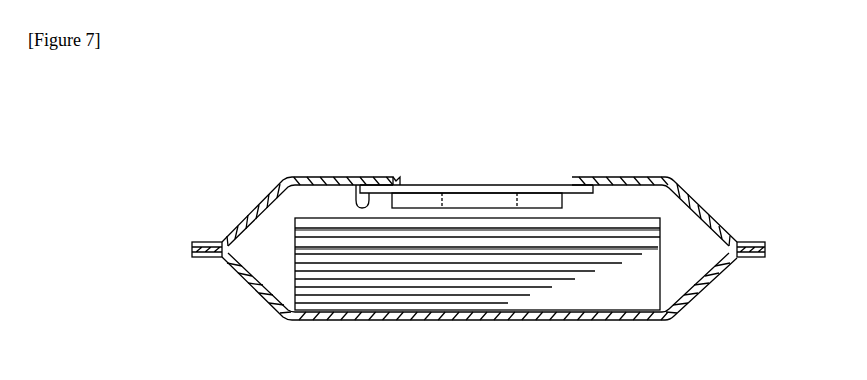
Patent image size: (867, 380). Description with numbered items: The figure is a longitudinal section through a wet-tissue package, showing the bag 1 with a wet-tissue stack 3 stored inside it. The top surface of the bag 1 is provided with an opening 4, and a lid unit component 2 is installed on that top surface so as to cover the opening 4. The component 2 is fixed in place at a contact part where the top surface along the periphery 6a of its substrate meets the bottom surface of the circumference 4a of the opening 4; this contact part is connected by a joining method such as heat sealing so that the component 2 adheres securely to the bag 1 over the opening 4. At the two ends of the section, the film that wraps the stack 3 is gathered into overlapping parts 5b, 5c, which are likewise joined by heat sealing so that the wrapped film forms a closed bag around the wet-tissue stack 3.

The bag 1 is at (317, 177).
The lid unit component 2 is at (468, 185).
The wet-tissue stack 3 is at (643, 218).
The opening 4 is at (559, 178).
The circumference of the opening 4a is at (386, 178).
The overlapping part 5b is at (201, 242).
The overlapping part 5c is at (752, 242).
The periphery of the substrate 6a is at (358, 186).